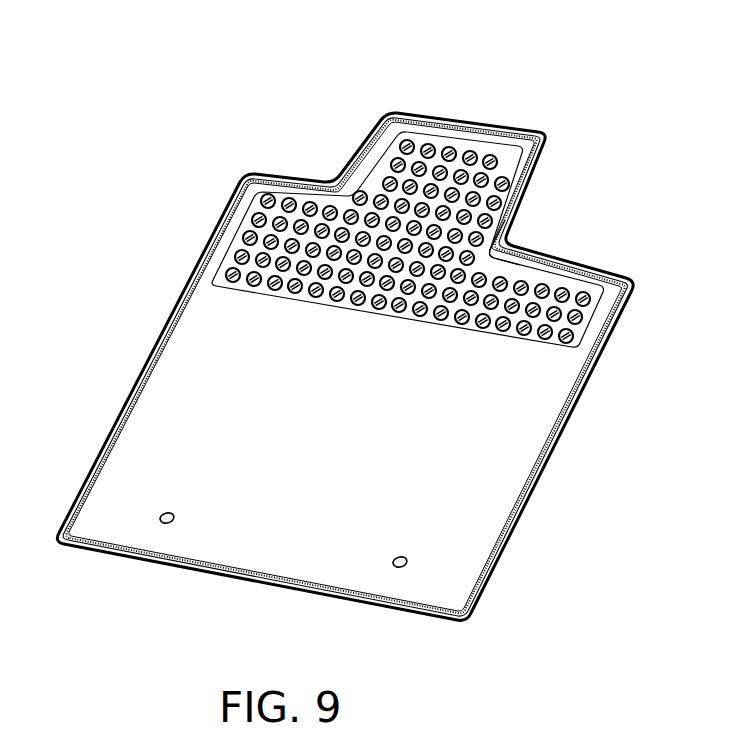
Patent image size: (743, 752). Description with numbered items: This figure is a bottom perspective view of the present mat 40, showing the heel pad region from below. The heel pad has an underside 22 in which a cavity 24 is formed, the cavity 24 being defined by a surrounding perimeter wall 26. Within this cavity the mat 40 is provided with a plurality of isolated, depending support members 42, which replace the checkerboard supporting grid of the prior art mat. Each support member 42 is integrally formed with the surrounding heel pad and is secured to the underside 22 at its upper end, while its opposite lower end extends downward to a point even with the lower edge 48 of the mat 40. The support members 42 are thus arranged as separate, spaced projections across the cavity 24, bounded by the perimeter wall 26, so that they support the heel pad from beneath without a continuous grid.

The mat 40 is at (641, 201).
The heel pad underside 22 is at (578, 329).
The cavity 24 is at (431, 182).
The perimeter wall 26 is at (492, 262).
The support members 42 is at (441, 318).
The lower edge 48 is at (448, 534).